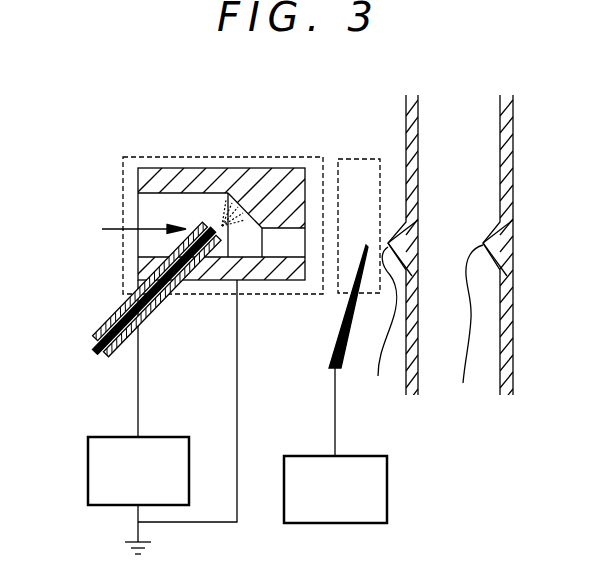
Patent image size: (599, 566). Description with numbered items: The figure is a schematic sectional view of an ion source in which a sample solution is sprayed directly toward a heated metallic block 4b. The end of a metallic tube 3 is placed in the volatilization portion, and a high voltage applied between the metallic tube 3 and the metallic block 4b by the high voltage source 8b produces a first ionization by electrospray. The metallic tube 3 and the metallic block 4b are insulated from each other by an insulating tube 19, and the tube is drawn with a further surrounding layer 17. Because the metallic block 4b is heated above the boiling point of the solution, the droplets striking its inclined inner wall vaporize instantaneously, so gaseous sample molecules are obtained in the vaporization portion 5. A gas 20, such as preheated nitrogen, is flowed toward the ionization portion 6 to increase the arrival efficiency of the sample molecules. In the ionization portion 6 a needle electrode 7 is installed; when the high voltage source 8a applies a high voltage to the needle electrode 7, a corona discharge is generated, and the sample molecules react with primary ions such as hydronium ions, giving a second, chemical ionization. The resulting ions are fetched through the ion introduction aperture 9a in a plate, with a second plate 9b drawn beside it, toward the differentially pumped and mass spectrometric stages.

The metallic tube 3 is at (153, 290).
The metallic block 4b is at (158, 157).
The vaporization portion 5 is at (232, 158).
The ionization portion 6 is at (352, 168).
The needle electrode 7 is at (330, 365).
The high voltage source 8a is at (387, 508).
The high voltage source 8b is at (88, 496).
The ion introduction aperture 9a is at (392, 250).
The deflection plate 9b is at (482, 254).
The insulating layer 17 is at (149, 281).
The insulating tube 19 is at (161, 296).
The gas 20 is at (112, 230).